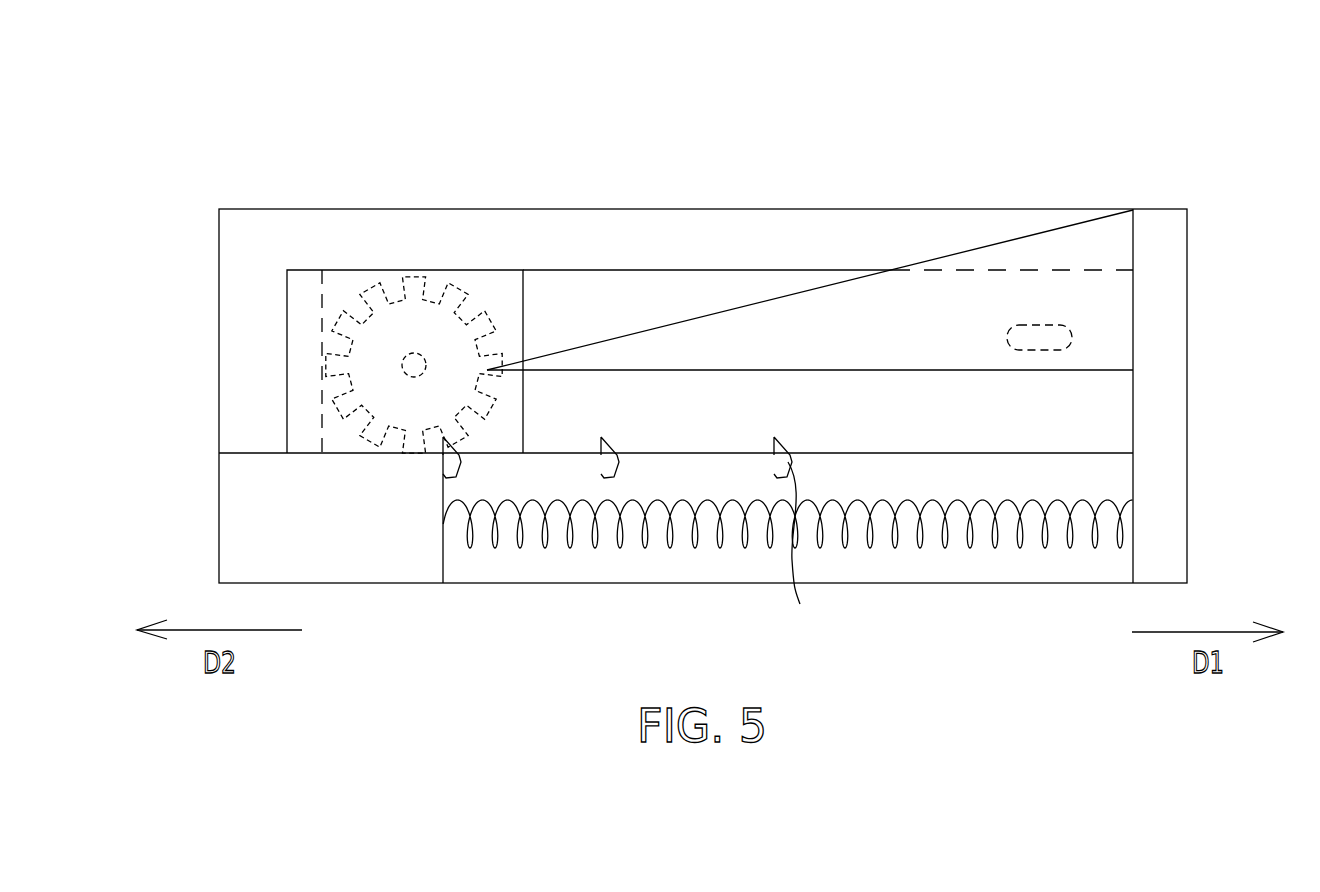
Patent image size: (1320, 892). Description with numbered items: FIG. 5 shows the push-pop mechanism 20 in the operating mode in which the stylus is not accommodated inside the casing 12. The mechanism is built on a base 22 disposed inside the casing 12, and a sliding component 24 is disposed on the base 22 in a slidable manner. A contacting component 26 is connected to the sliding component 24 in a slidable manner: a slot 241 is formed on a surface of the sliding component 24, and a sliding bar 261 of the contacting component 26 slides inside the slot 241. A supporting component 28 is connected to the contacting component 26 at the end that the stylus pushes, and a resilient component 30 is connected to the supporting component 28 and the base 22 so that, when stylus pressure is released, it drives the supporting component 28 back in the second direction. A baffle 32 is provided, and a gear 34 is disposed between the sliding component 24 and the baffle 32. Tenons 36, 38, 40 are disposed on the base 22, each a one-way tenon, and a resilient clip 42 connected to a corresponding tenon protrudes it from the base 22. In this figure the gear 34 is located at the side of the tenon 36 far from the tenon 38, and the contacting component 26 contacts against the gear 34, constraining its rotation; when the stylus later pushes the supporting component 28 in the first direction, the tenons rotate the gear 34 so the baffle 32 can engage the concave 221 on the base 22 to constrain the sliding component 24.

The push-pop mechanism 20 is at (278, 158).
The casing 12 is at (240, 250).
The base 22 is at (236, 528).
The concave 221 is at (442, 563).
The sliding component 24 is at (587, 313).
The slot 241 is at (1053, 337).
The contacting component 26 is at (835, 337).
The sliding bar 261 is at (1018, 335).
The supporting component 28 is at (1173, 486).
The resilient component 30 is at (1067, 549).
The baffle 32 is at (330, 433).
The gear 34 is at (343, 333).
The tenon 36 is at (447, 446).
The tenon 38 is at (602, 438).
The tenon 40 is at (775, 438).
The resilient clip 42 is at (803, 550).